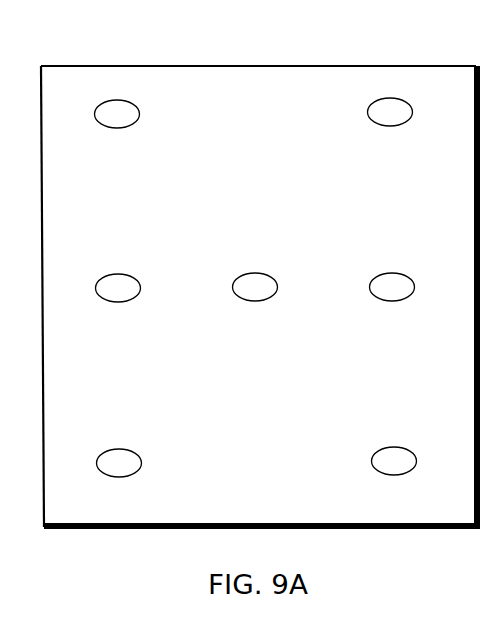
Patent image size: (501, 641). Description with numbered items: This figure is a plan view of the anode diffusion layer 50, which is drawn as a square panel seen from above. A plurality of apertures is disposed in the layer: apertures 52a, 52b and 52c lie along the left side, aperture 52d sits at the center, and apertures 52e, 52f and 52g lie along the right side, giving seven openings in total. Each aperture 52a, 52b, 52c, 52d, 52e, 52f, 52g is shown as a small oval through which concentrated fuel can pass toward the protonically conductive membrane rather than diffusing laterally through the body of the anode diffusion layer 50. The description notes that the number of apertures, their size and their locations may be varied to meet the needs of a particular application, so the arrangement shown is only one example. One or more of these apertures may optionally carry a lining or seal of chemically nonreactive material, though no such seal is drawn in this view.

The anode diffusion layer 50 is at (240, 76).
The aperture 52a is at (127, 126).
The aperture 52b is at (104, 302).
The aperture 52c is at (112, 449).
The aperture 52d is at (238, 274).
The aperture 52e is at (397, 125).
The aperture 52f is at (402, 300).
The aperture 52g is at (398, 447).